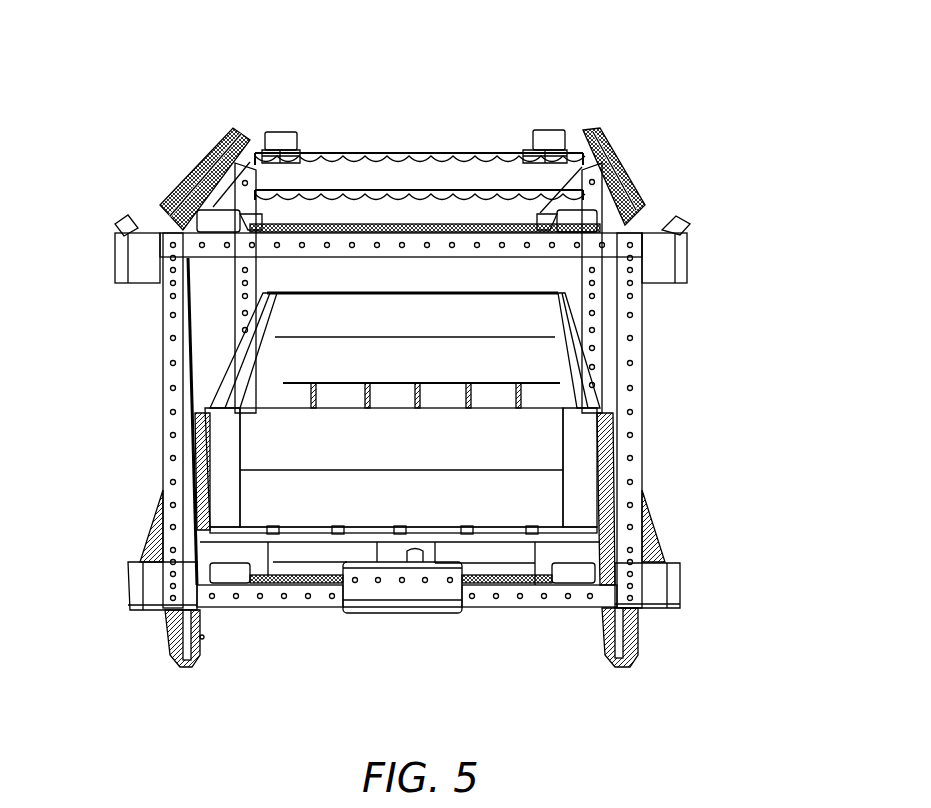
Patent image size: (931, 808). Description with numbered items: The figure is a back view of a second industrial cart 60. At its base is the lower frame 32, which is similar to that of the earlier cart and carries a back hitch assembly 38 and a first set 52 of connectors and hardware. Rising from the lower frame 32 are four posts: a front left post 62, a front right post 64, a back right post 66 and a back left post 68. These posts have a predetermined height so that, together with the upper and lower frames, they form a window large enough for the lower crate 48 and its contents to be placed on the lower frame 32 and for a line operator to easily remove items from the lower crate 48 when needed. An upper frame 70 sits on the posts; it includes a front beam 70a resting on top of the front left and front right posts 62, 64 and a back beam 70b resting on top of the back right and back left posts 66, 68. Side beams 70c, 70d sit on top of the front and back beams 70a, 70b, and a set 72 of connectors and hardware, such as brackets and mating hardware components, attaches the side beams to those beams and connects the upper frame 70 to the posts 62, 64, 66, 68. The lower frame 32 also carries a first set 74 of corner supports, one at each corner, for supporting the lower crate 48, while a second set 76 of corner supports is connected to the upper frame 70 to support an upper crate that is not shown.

The lower frame 32 is at (294, 602).
The back hitch assembly 38 is at (437, 606).
The lower crate 48 is at (298, 454).
The first set of connectors and hardware 52 is at (650, 583).
The industrial cart 60 is at (735, 286).
The front left post 62 is at (240, 287).
The front right post 64 is at (598, 283).
The back right post 66 is at (633, 373).
The back left post 68 is at (178, 423).
The upper frame 70 is at (411, 250).
The front beam 70a is at (403, 155).
The back beam 70b is at (363, 250).
The side beam 70c is at (620, 162).
The side beam 70d is at (182, 228).
The set of connectors and hardware 72 is at (648, 263).
The first set of corner supports 74 is at (232, 575).
The second set of corner supports 76 is at (182, 185).